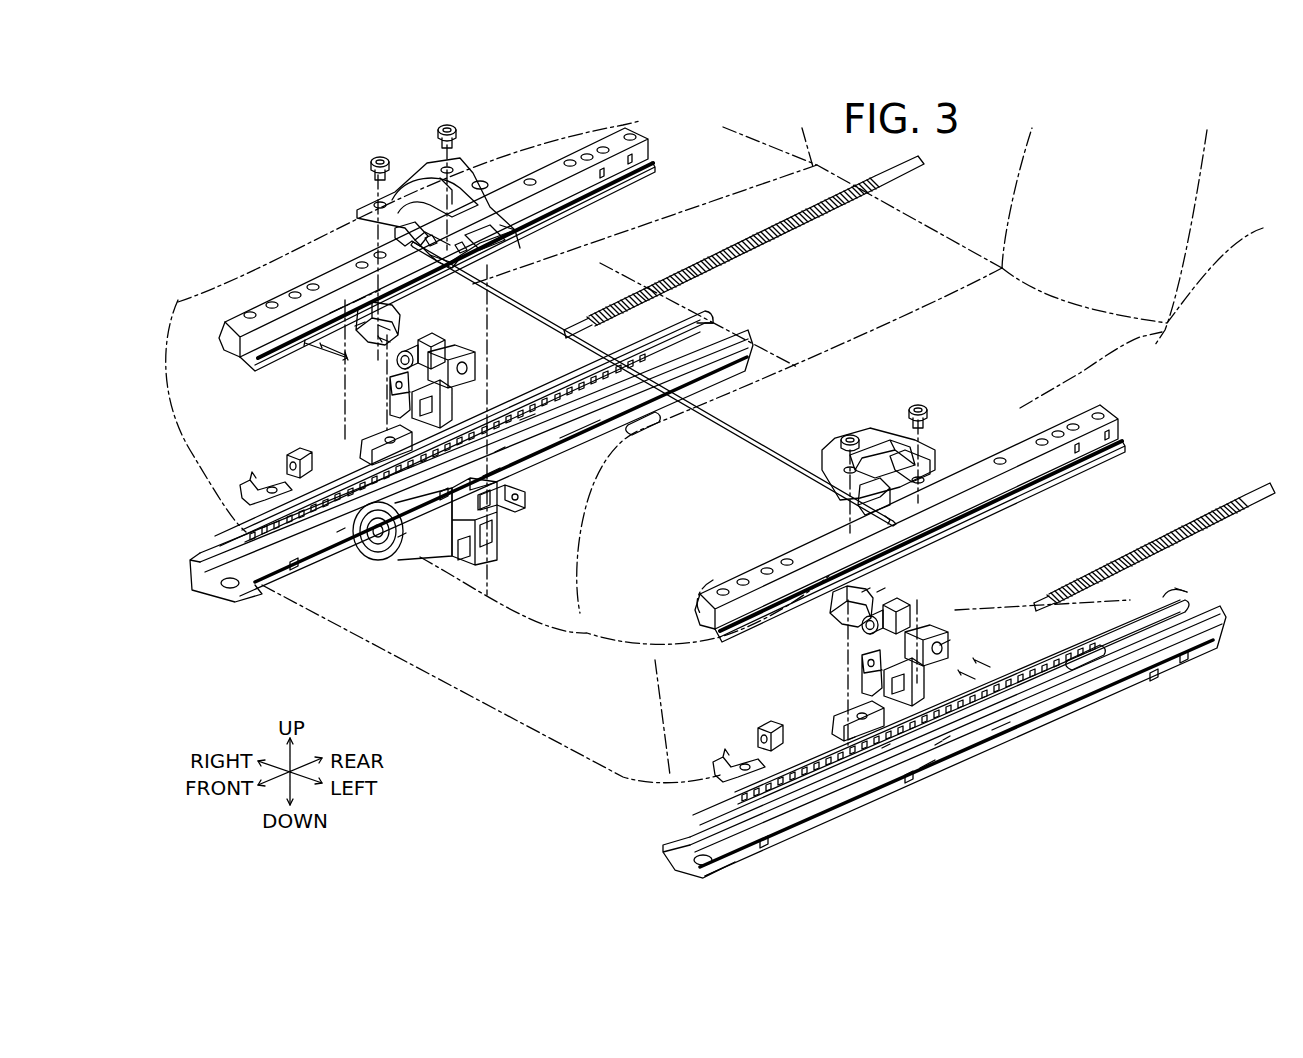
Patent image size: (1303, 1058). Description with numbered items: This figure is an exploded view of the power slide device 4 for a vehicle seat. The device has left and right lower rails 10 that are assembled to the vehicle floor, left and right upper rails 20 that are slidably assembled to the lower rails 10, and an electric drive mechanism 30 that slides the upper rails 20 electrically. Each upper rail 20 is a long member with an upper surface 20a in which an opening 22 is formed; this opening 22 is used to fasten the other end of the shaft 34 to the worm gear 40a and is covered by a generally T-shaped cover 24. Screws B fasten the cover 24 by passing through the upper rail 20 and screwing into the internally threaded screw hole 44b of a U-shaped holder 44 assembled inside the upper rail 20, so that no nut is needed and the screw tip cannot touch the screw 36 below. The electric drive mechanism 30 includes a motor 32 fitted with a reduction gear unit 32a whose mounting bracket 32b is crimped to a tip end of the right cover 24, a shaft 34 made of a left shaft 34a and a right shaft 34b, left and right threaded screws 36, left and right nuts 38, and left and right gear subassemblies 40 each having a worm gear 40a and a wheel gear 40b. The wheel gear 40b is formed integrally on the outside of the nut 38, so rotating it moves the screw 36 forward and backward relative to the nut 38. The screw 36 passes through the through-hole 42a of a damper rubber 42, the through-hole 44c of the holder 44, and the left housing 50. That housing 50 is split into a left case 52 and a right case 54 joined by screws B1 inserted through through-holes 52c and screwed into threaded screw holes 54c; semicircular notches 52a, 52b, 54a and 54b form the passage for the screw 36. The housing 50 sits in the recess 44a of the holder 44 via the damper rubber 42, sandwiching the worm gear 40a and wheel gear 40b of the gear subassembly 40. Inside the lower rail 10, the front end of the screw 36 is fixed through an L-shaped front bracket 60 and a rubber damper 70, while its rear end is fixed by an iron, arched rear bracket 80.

The power slide device 4 is at (636, 818).
The lower rail 10 is at (265, 587).
The upper rail 20 is at (252, 300).
The upper surface 20a is at (303, 290).
The opening 22 is at (405, 238).
The cover 24 is at (462, 200).
The electric drive mechanism 30 is at (493, 553).
The motor 32 is at (413, 535).
The reduction gear unit 32a is at (472, 560).
The mounting bracket 32b is at (510, 508).
The shaft 34 is at (653, 384).
The left shaft 34a is at (537, 313).
The right shaft 34b is at (470, 268).
The screw 36 is at (777, 243).
The nut 38 is at (393, 383).
The gear subassembly 40 is at (653, 483).
The worm gear 40a is at (398, 357).
The wheel gear 40b is at (410, 368).
The damper rubber 42 is at (400, 405).
The through-hole 42a is at (385, 440).
The holder 44 is at (350, 440).
The recess 44a is at (483, 476).
The screw hole 44b is at (337, 532).
The through-hole 44c is at (398, 537).
The left housing 50 is at (530, 333).
The left case 52 is at (445, 368).
The semicircular notch 52a is at (560, 438).
The semicircular notch 52b is at (1160, 600).
The through-hole 52c is at (525, 425).
The right case 54 is at (430, 348).
The semicircular notch 54a is at (318, 346).
The semicircular notch 54b is at (380, 338).
The screw hole 54c is at (355, 326).
The front bracket 60 is at (734, 762).
The rubber damper 70 is at (285, 462).
The rear bracket 80 is at (650, 415).
The screw B is at (440, 128).
The screw B1 is at (338, 357).